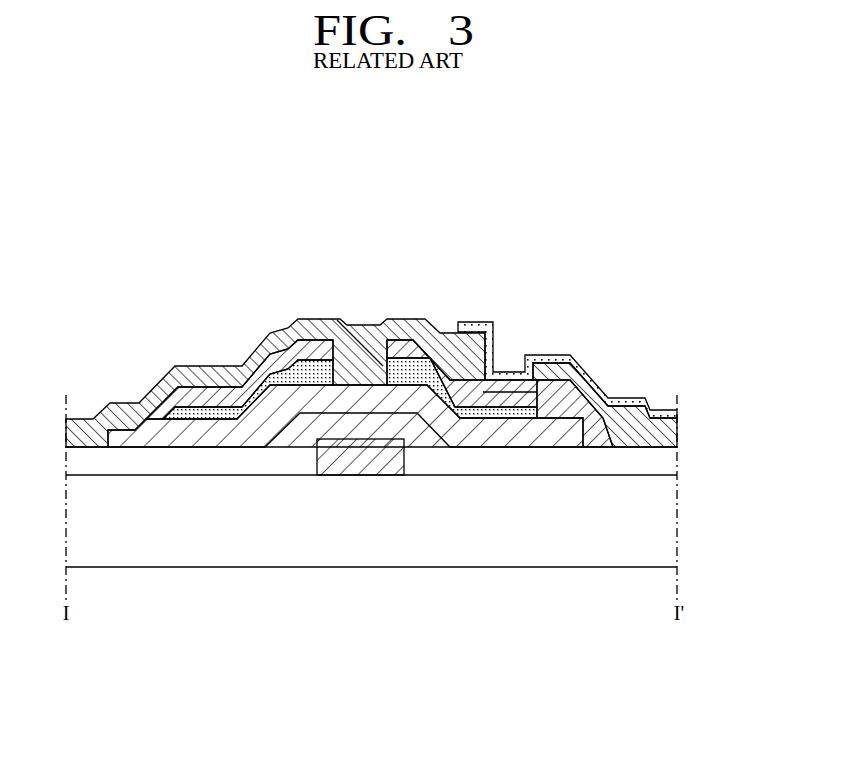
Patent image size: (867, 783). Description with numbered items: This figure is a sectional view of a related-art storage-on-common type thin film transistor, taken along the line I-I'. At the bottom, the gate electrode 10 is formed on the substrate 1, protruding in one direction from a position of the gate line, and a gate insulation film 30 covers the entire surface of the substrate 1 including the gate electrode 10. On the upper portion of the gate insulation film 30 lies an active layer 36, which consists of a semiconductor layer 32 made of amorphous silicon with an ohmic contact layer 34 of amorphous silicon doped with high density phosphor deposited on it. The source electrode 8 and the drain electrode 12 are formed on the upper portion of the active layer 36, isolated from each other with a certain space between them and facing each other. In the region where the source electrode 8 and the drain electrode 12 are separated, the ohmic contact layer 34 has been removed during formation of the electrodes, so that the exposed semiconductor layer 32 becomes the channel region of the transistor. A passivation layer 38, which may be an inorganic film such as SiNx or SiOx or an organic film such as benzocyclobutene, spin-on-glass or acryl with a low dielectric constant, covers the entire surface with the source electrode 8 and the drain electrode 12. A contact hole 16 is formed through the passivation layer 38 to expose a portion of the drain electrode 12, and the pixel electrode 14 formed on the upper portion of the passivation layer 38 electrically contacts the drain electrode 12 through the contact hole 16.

The substrate 1 is at (658, 526).
The gate electrode 10 is at (357, 474).
The gate insulation film 30 is at (658, 467).
The semiconductor layer 32 is at (237, 364).
The ohmic contact layer 34 is at (293, 350).
The active layer 36 is at (215, 327).
The drain electrode 12 is at (400, 352).
The pixel electrode 14 is at (570, 355).
The contact hole 16 is at (514, 334).
The passivation layer 38 is at (658, 434).
The source electrode 8 is at (163, 370).